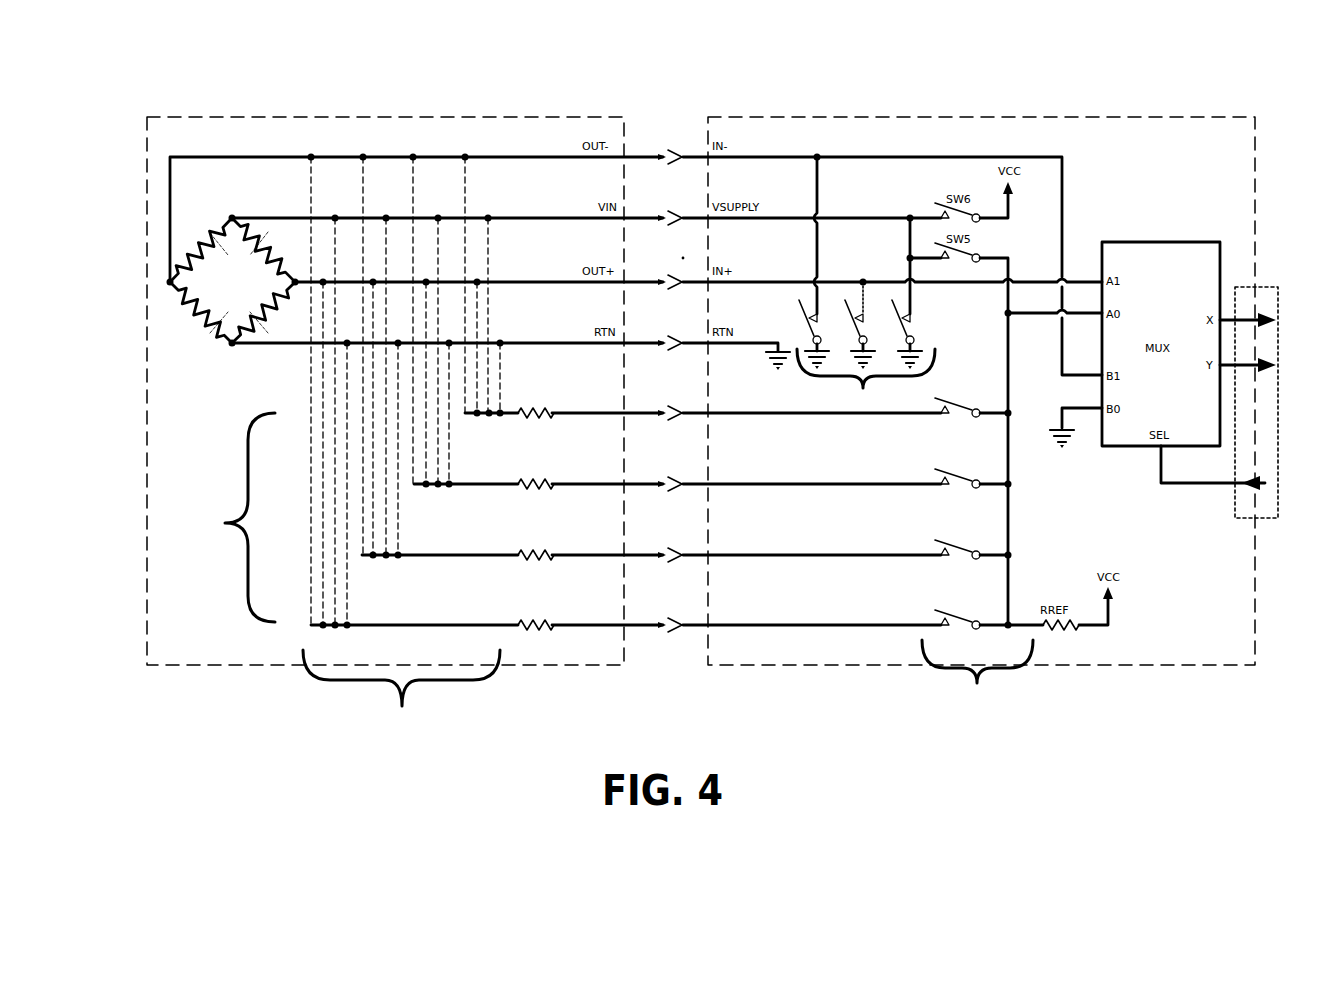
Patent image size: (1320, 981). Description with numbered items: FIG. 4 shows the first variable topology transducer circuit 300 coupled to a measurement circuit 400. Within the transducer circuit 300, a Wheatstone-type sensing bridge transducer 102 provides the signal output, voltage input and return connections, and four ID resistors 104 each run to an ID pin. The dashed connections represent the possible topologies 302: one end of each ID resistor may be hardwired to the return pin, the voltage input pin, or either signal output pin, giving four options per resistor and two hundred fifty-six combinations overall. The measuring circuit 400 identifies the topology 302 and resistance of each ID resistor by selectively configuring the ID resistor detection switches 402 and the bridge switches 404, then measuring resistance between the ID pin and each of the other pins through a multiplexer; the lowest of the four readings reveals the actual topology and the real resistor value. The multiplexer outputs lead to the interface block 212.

The variable topology transducer circuit 300 is at (370, 95).
The measurement circuit 400 is at (968, 95).
The transducer 102 is at (233, 283).
The ID resistors 104 is at (328, 391).
The topologies 302 is at (517, 565).
The bridge switches 404 is at (856, 351).
The ID resistor detection switches 402 is at (858, 512).
The analog-to-digital converter interface 212 is at (1267, 300).